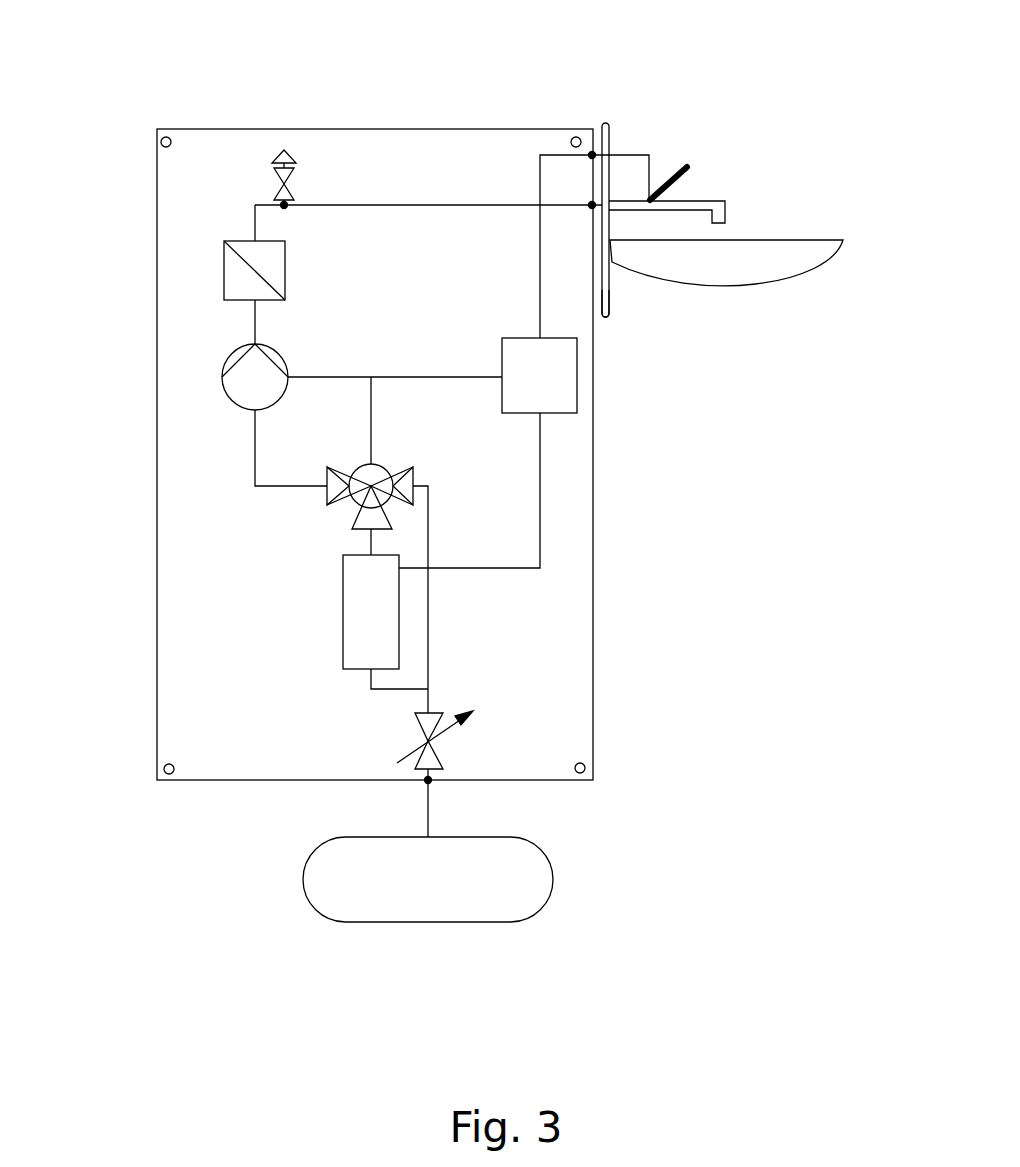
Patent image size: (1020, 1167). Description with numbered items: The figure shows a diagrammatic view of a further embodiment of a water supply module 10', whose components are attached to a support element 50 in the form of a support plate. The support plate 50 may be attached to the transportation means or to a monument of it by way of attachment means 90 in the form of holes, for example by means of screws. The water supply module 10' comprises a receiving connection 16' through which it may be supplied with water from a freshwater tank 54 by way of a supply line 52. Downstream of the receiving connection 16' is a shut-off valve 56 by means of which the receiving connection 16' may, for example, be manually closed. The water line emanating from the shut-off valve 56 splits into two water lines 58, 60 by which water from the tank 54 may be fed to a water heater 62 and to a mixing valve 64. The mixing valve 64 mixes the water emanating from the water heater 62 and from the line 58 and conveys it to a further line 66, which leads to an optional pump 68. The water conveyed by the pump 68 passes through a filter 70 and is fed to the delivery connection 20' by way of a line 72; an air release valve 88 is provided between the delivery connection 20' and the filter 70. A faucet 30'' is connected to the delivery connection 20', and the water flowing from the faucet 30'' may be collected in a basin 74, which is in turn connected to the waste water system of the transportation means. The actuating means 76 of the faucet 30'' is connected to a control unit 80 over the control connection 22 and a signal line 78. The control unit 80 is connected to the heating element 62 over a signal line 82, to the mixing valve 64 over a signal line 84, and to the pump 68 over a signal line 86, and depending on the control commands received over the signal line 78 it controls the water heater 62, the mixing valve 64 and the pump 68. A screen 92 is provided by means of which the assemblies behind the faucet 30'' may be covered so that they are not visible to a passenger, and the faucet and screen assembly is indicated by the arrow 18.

The water supply module 10' is at (326, 52).
The receiving connection 16' is at (475, 804).
The mirror / wash station assembly 18 is at (672, 70).
The delivery connection 20' is at (644, 149).
The control connection 22 is at (604, 150).
The faucet 30'' is at (711, 178).
The support element 50 is at (576, 647).
The supply line 52 is at (427, 806).
The freshwater tank 54 is at (462, 902).
The shut-off valve 56 is at (440, 752).
The water line 58 is at (429, 628).
The water line 60 is at (390, 690).
The water heater 62 is at (358, 623).
The mixing valve 64 is at (352, 505).
The line 66 is at (255, 455).
The pump 68 is at (222, 377).
The filter 70 is at (268, 276).
The line 72 is at (400, 203).
The basin 74 is at (772, 268).
The actuating means 76 is at (688, 166).
The signal line 78 is at (541, 283).
The control unit 80 is at (548, 388).
The signal line 82 is at (541, 530).
The signal line 84 is at (372, 415).
The signal line 86 is at (350, 377).
The air release valve 88 is at (278, 200).
The attachment means 90 is at (160, 135).
The screen 92 is at (610, 287).